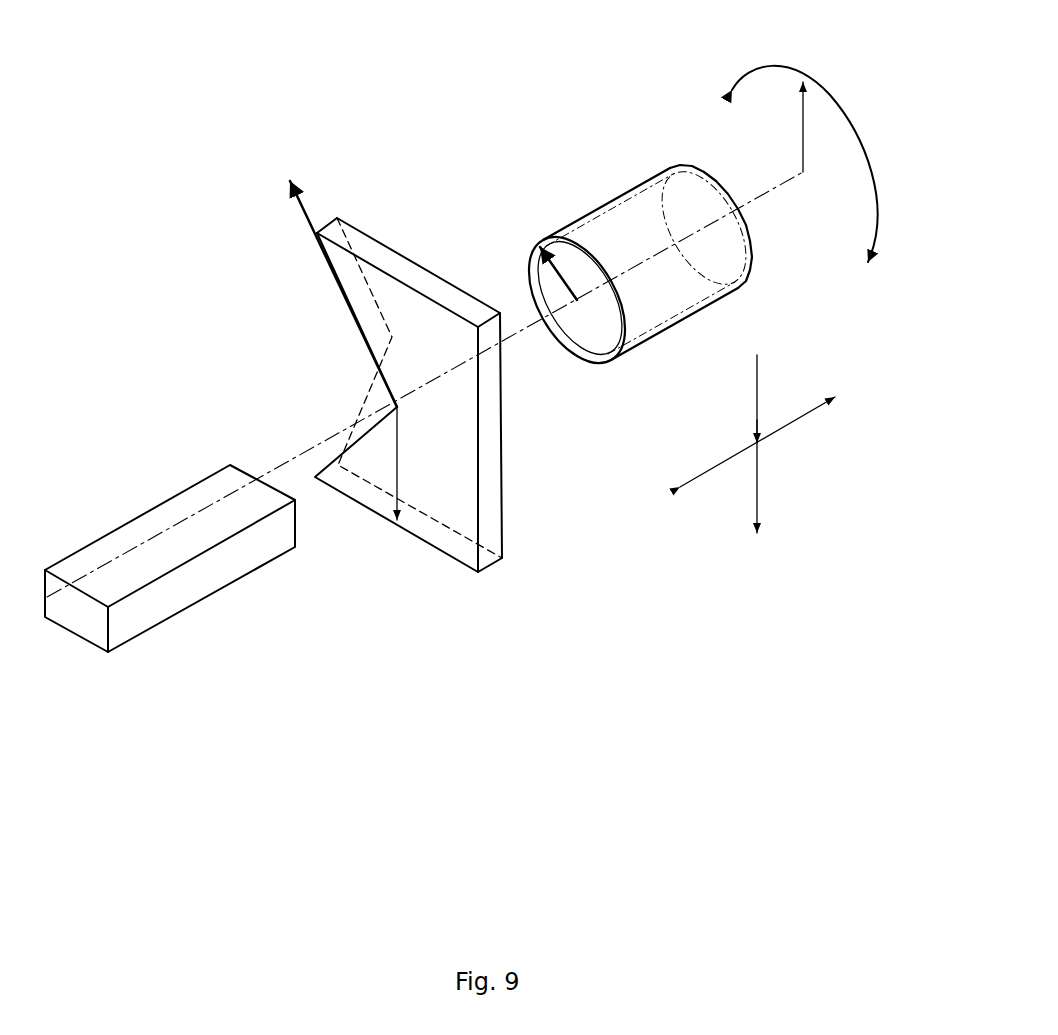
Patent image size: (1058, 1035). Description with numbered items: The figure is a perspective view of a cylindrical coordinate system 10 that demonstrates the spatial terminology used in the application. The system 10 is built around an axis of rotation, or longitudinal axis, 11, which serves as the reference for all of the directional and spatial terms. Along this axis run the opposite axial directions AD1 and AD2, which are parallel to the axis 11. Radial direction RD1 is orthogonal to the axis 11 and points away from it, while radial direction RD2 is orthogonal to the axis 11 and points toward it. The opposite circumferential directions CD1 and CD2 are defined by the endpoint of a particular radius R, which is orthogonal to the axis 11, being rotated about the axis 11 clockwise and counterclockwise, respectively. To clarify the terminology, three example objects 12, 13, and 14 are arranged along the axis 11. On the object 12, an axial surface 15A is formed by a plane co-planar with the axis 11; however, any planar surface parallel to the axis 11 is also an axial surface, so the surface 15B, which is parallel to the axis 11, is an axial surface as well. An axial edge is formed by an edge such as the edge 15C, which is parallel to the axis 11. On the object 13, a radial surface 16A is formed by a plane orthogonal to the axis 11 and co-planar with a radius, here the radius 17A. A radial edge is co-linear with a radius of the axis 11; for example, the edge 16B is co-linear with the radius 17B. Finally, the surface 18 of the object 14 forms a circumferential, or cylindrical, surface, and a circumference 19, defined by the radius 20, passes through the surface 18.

The cylindrical coordinate system 10 is at (267, 310).
The axis of rotation 11 is at (742, 202).
The object 12 is at (135, 638).
The object 13 is at (510, 560).
The object 14 is at (663, 333).
The axial surface 15A is at (133, 537).
The axial surface 15B is at (187, 593).
The axial edge 15C is at (160, 503).
The radial surface 16A is at (403, 303).
The radial edge 16B is at (350, 297).
The radius 17A is at (397, 457).
The radius 17B is at (303, 210).
The circumferential surface 18 is at (605, 200).
The circumference 19 is at (535, 263).
The radius 20 is at (526, 290).
The radius R is at (803, 120).
The circumferential direction CD1 is at (885, 225).
The circumferential direction CD2 is at (760, 63).
The radial direction RD1 is at (758, 498).
The radial direction RD2 is at (758, 373).
The axial direction AD1 is at (788, 423).
The axial direction AD2 is at (718, 463).